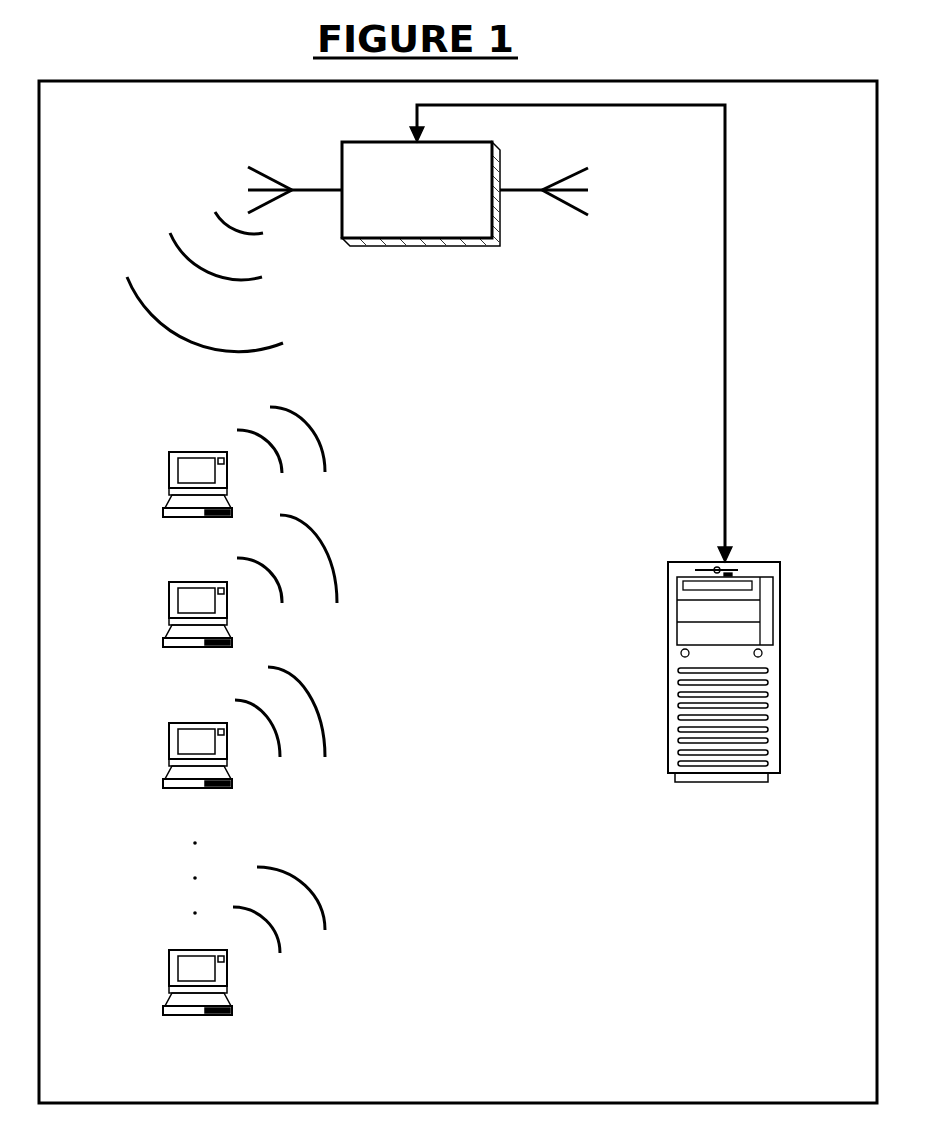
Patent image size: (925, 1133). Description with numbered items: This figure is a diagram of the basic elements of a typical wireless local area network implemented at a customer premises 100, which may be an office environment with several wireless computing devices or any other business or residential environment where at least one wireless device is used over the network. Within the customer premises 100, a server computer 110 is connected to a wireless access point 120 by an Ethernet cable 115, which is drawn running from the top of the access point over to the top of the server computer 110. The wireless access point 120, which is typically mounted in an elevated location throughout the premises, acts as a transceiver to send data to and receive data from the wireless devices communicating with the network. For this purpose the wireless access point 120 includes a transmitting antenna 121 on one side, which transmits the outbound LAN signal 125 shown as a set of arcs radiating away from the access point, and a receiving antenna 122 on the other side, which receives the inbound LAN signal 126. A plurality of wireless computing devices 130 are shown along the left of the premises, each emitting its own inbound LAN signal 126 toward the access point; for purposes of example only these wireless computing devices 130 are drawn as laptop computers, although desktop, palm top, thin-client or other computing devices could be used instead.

The customer premises 100 is at (458, 592).
The server computer 110 is at (790, 585).
The Ethernet cable 115 is at (745, 367).
The wireless access point 120 is at (421, 194).
The transmitting antenna 121 is at (284, 168).
The receiving antenna 122 is at (568, 163).
The outbound LAN signal 125 is at (205, 282).
The inbound LAN signal 126 is at (316, 680).
The wireless computing devices 130 is at (148, 502).